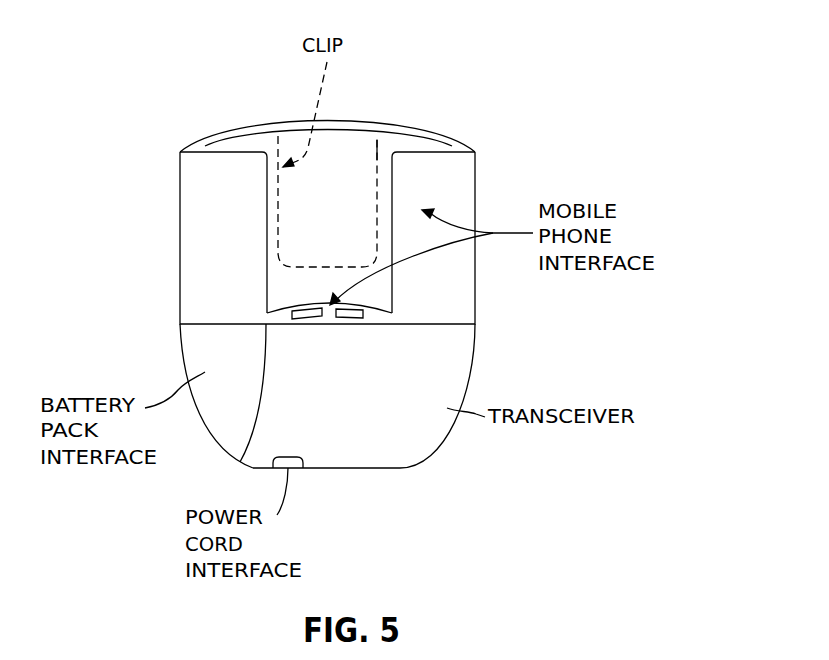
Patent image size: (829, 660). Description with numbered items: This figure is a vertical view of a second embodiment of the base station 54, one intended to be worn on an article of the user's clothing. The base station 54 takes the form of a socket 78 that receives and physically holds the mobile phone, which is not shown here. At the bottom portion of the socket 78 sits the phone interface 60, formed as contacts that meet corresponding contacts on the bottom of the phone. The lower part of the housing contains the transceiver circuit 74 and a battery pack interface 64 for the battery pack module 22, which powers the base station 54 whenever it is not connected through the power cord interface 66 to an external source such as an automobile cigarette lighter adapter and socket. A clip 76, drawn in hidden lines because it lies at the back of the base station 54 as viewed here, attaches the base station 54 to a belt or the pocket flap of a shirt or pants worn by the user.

The battery pack module 22 is at (192, 345).
The base station 54 is at (463, 168).
The phone interface 60 is at (350, 318).
The battery pack interface 64 is at (228, 438).
The power cord interface 66 is at (295, 468).
The transceiver circuit 74 is at (462, 368).
The clip 76 is at (340, 180).
The socket 78 is at (383, 152).